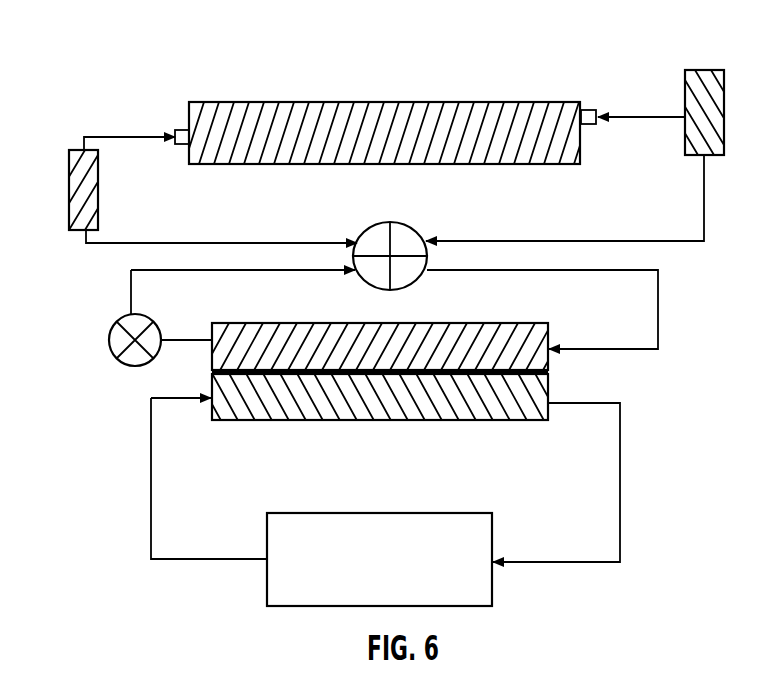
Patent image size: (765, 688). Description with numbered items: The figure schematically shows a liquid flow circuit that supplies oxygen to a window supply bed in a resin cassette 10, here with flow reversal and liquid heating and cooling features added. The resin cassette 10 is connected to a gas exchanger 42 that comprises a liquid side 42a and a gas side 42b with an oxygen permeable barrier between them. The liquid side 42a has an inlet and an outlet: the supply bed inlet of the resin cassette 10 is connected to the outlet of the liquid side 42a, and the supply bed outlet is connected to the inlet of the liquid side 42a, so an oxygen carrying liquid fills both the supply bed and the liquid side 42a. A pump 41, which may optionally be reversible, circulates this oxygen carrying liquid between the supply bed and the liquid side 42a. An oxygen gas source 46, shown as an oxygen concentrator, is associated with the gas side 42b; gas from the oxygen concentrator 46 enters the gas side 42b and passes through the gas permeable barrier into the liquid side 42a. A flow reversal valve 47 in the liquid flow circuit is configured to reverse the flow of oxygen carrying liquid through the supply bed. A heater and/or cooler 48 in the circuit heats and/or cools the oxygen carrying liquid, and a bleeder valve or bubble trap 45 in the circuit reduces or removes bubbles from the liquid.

The resin cassette 10 is at (382, 130).
The heater/cooler 48 is at (82, 152).
The bleeder valve or bubble trap 45 is at (704, 93).
The flow reversal valve 47 is at (380, 240).
The pump 41 is at (118, 342).
The gas exchanger 42 is at (420, 377).
The liquid side 42a is at (362, 340).
The gas side 42b is at (410, 405).
The oxygen gas source 46 is at (385, 502).